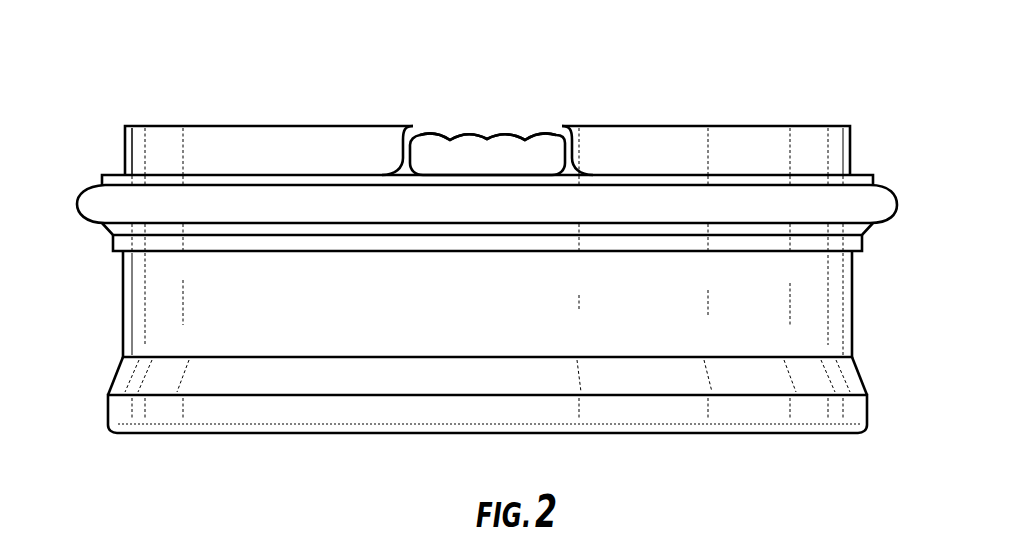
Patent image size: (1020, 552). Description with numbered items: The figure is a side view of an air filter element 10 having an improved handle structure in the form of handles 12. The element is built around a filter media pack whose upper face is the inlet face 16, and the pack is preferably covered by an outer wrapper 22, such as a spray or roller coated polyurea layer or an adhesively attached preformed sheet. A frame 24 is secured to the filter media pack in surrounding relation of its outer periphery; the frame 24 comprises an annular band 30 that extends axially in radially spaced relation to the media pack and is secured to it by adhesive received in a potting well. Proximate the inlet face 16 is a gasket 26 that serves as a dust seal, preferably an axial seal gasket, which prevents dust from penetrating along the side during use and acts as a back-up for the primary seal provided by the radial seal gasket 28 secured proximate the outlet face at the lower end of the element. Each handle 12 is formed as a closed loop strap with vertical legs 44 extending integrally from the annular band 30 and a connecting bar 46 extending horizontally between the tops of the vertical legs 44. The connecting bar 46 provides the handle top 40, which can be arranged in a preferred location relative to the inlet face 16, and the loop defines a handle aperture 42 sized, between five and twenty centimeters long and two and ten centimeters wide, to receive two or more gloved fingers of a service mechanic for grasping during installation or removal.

The air filter element 10 is at (795, 68).
The handles 12 is at (533, 131).
The inlet face 16 is at (682, 126).
The outer wrapper 22 is at (137, 293).
The frame 24 is at (103, 173).
The gasket 26 is at (885, 207).
The radial seal gasket 28 is at (113, 403).
The annular band 30 is at (135, 172).
The handle top 40 is at (442, 127).
The handle aperture 42 is at (455, 156).
The vertical legs 44 is at (403, 150).
The connecting bar 46 is at (489, 135).